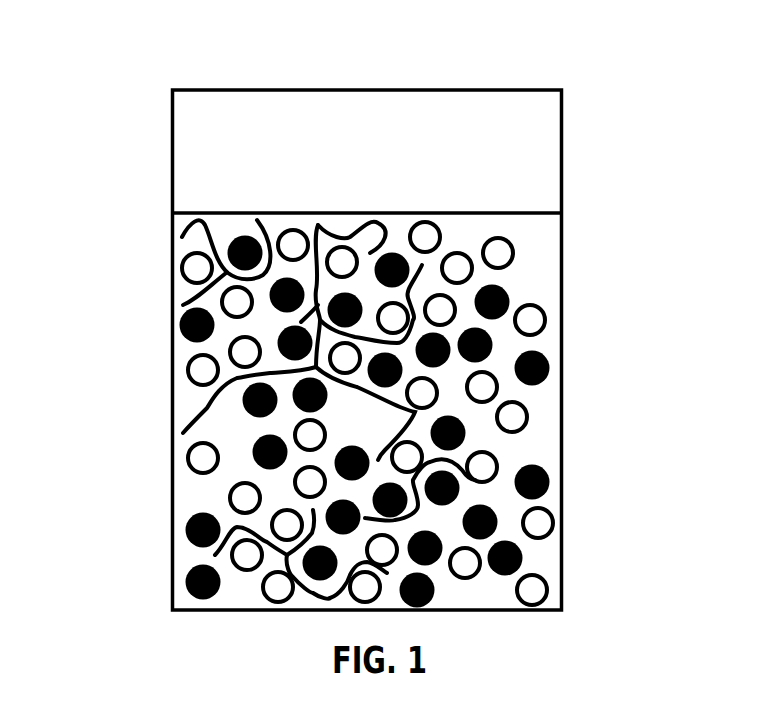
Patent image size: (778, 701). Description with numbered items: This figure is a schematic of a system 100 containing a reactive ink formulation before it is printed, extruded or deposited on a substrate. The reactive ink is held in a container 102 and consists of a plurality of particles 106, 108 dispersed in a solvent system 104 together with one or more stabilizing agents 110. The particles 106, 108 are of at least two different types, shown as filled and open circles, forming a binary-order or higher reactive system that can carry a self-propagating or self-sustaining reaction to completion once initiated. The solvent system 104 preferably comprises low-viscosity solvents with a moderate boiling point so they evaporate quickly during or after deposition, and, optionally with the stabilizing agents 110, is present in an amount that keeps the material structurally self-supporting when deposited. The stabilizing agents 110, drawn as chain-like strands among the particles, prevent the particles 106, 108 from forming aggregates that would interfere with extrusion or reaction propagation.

The system 100 is at (154, 53).
The container 102 is at (562, 131).
The solvent system 104 is at (548, 253).
The particles 106 is at (525, 553).
The particles 108 is at (530, 408).
The stabilizing agents 110 is at (183, 437).